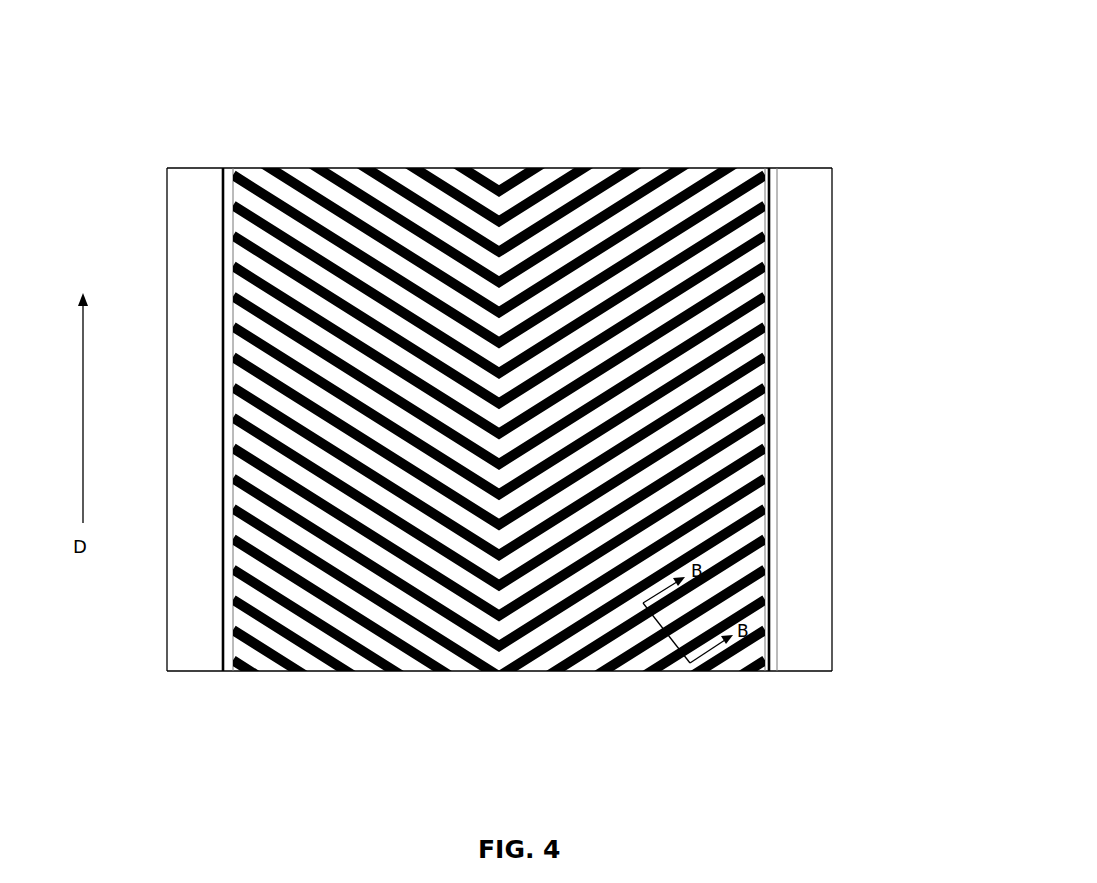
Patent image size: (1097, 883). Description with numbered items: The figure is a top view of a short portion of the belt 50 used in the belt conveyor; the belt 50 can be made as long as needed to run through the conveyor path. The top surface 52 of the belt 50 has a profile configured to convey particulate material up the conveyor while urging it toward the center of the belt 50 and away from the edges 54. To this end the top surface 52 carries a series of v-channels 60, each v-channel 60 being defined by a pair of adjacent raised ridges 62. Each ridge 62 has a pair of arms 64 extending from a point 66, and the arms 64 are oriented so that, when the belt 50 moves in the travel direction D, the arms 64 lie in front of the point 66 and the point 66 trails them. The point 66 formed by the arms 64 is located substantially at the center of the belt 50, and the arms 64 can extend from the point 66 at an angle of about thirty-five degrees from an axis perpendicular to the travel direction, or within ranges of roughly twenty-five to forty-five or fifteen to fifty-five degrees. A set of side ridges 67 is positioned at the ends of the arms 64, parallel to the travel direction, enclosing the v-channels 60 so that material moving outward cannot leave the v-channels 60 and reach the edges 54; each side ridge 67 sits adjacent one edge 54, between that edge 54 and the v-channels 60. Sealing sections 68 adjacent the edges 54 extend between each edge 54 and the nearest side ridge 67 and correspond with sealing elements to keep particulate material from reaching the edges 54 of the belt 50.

The belt 50 is at (806, 108).
The top surface 52 is at (720, 400).
The edges 54 is at (165, 598).
The v-channels 60 is at (310, 245).
The raised ridges 62 is at (362, 222).
The arms 64 is at (407, 598).
The point 66 is at (497, 623).
The side ridges 67 is at (222, 263).
The sealing sections 68 is at (183, 630).